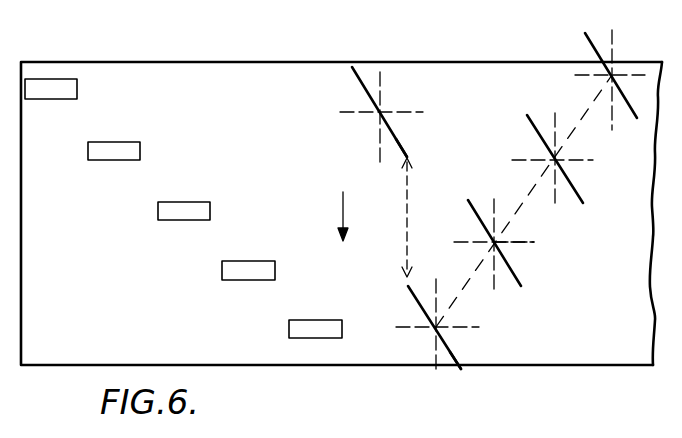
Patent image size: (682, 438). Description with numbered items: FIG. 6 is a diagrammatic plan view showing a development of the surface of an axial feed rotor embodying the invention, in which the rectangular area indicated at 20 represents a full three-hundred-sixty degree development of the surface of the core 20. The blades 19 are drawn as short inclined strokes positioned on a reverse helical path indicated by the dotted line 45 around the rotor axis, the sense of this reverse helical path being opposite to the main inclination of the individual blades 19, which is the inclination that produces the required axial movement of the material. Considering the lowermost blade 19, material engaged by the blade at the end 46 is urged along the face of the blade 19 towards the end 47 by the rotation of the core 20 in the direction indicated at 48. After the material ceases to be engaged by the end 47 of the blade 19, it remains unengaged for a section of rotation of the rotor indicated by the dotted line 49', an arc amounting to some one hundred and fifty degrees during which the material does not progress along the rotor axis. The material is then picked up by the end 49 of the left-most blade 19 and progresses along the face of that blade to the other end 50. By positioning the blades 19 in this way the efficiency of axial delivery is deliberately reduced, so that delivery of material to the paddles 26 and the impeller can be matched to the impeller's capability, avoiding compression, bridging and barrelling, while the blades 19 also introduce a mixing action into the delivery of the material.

The core 20 is at (263, 95).
The paddles 26 is at (193, 202).
The blades 19 is at (389, 127).
The end of blade 50 is at (360, 82).
The end of blade 49 is at (428, 116).
The section of rotation 49' is at (369, 219).
The direction of rotation 48 is at (320, 210).
The end of blade 47 is at (408, 288).
The end of blade 46 is at (460, 368).
The reverse helical path 45 is at (527, 198).